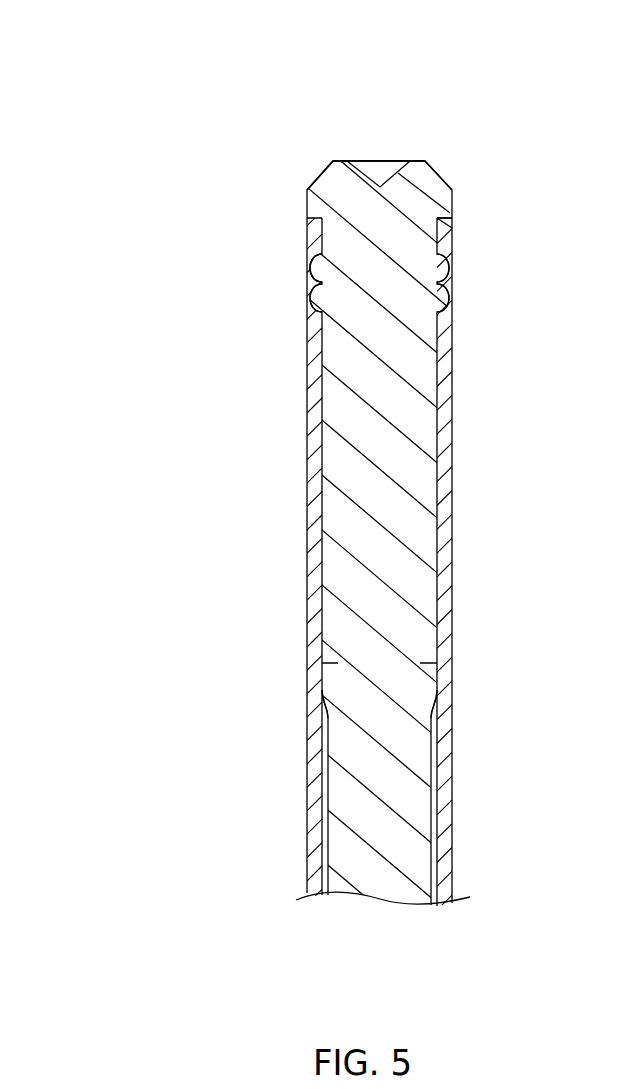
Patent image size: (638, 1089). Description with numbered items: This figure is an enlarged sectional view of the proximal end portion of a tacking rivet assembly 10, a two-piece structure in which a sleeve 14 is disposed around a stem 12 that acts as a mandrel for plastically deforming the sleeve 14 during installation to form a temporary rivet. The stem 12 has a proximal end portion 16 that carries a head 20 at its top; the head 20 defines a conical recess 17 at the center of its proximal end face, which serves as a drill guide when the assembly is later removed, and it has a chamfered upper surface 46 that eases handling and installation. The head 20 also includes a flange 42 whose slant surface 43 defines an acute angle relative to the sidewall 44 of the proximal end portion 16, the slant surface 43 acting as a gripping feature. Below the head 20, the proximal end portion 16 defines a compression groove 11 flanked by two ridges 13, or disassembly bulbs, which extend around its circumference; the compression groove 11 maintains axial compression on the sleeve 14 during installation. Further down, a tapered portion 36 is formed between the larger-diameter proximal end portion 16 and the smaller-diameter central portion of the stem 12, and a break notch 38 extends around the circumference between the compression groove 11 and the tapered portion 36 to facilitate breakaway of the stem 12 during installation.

The tacking rivet assembly 10 is at (123, 97).
The compression groove 11 is at (452, 293).
The stem 12 is at (358, 825).
The ridges 13 is at (312, 305).
The sleeve 14 is at (445, 487).
The proximal end portion 16 is at (404, 408).
The recess 17 is at (380, 168).
The head 20 is at (428, 185).
The tapered portion 36 is at (440, 709).
The break notch 38 is at (322, 675).
The flange 42 is at (317, 205).
The slant surface 43 is at (452, 228).
The sidewall 44 is at (320, 256).
The chamfered upper surface 46 is at (417, 162).